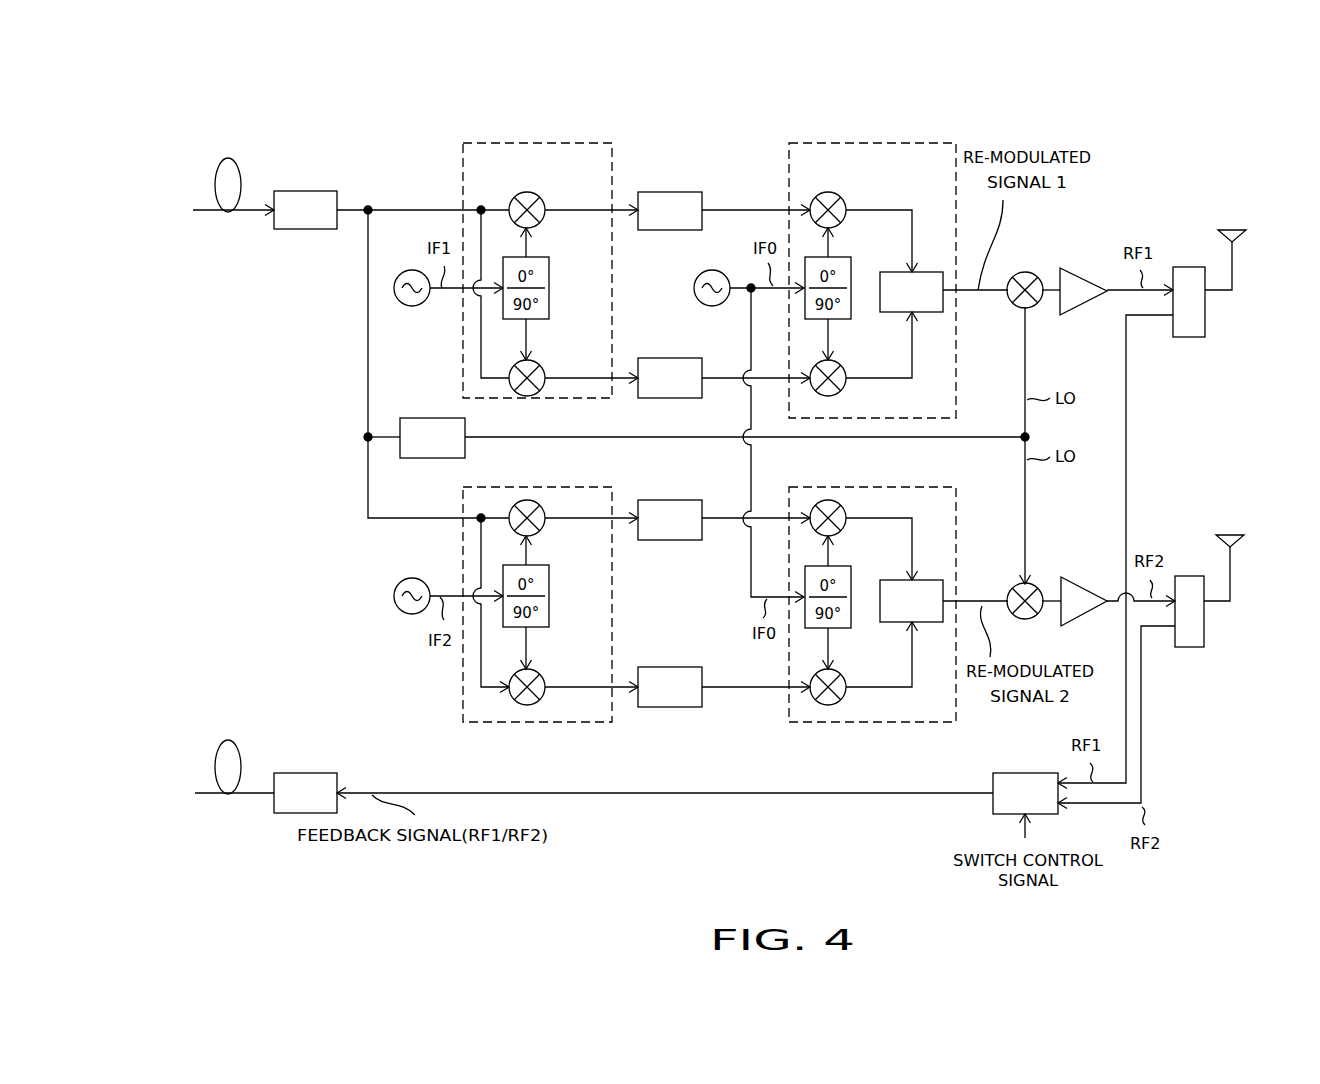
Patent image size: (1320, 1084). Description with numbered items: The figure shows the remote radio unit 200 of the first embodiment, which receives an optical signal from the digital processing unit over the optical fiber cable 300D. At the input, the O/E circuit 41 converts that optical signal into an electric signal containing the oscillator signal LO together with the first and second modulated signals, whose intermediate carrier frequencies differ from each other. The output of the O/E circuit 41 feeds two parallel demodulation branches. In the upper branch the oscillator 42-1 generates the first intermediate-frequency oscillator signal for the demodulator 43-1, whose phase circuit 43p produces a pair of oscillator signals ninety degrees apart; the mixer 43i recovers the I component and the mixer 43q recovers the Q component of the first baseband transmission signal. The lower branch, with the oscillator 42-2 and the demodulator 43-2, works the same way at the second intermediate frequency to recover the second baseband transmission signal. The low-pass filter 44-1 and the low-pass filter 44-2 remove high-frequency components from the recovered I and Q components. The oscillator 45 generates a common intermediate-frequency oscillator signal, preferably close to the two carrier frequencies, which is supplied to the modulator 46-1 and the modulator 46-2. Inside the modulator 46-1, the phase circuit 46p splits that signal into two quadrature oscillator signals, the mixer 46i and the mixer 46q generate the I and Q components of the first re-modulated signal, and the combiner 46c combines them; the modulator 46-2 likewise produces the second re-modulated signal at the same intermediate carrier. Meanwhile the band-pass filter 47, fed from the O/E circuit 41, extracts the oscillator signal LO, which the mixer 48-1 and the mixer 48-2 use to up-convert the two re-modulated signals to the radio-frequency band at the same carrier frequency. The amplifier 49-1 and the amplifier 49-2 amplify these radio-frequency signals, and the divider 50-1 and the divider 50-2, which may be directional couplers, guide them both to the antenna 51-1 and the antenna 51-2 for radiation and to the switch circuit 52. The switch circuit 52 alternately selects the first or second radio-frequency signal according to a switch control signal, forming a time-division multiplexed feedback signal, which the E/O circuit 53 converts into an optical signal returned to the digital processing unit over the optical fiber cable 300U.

The remote radio unit 200 is at (1118, 108).
The optical fiber cable 300D is at (230, 158).
The optical fiber cable 300U is at (230, 740).
The O/E circuit 41 is at (298, 191).
The oscillator 42-1 is at (412, 306).
The oscillator 42-2 is at (394, 598).
The demodulator 43-1 is at (612, 272).
The demodulator 43-2 is at (612, 592).
The mixer 43i is at (540, 198).
The phase circuit 43p is at (549, 272).
The mixer 43q is at (541, 366).
The low-pass filter 44-1 is at (660, 192).
The low-pass filter 44-2 is at (660, 500).
The oscillator 45 is at (712, 306).
The modulator 46-1 is at (858, 143).
The modulator 46-2 is at (862, 487).
The mixer 46i is at (842, 198).
The phase circuit 46p is at (840, 322).
The mixer 46q is at (845, 392).
The combiner 46c is at (893, 270).
The band-pass filter 47 is at (465, 450).
The mixer 48-1 is at (1037, 275).
The mixer 48-2 is at (1011, 585).
The amplifier 49-1 is at (1083, 305).
The amplifier 49-2 is at (1083, 584).
The divider 50-1 is at (1190, 337).
The divider 50-2 is at (1193, 647).
The antenna 51-1 is at (1232, 230).
The antenna 51-2 is at (1230, 536).
The switch circuit 52 is at (993, 808).
The E/O circuit 53 is at (298, 773).